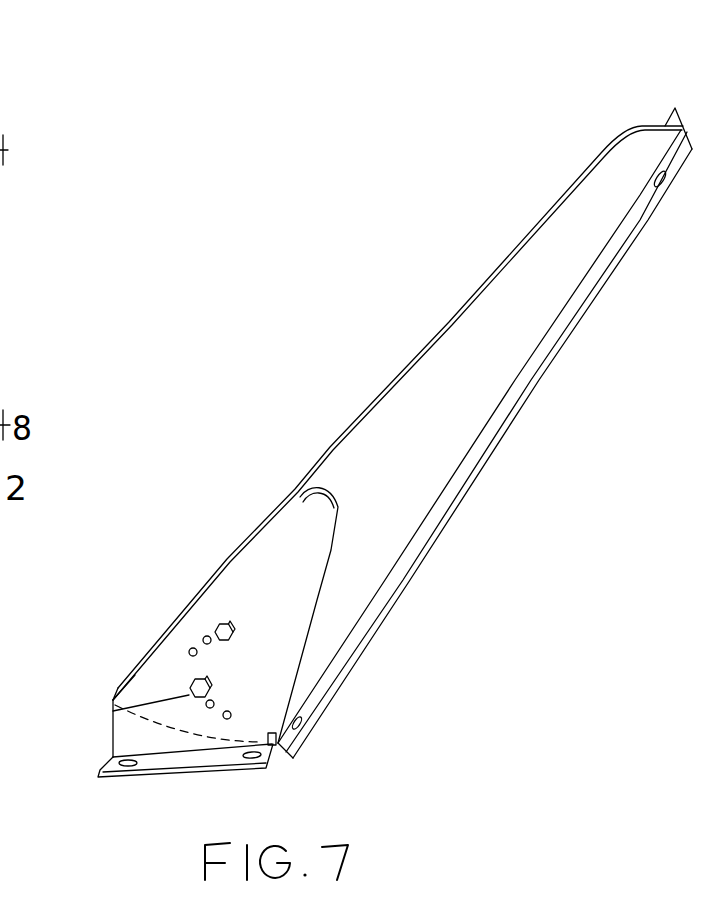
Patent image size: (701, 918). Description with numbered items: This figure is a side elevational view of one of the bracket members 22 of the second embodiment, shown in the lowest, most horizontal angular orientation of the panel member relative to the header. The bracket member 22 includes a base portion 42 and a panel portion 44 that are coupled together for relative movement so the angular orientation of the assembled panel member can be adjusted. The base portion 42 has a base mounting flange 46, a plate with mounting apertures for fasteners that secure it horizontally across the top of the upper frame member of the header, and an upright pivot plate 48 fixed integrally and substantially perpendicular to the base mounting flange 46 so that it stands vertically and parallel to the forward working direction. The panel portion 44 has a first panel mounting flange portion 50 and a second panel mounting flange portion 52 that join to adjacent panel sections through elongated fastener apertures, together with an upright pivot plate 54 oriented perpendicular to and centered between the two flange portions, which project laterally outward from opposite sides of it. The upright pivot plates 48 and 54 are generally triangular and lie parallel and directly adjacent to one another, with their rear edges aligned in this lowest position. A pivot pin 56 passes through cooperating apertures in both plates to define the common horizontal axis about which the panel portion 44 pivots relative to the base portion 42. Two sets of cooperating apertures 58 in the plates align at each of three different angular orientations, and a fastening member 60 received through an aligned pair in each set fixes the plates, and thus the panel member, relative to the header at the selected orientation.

The bracket member 22 is at (303, 248).
The base portion 42 is at (262, 592).
The panel portion 44 is at (467, 340).
The base mounting flange 46 is at (180, 764).
The upright pivot plate 48 is at (167, 685).
The first panel mounting flange portion 50 is at (483, 450).
The second panel mounting flange portion 52 is at (670, 107).
The upright pivot plate 54 is at (403, 422).
The pivot pin 56 is at (280, 744).
The cooperating apertures 58 is at (190, 648).
The fastening member 60 is at (229, 623).